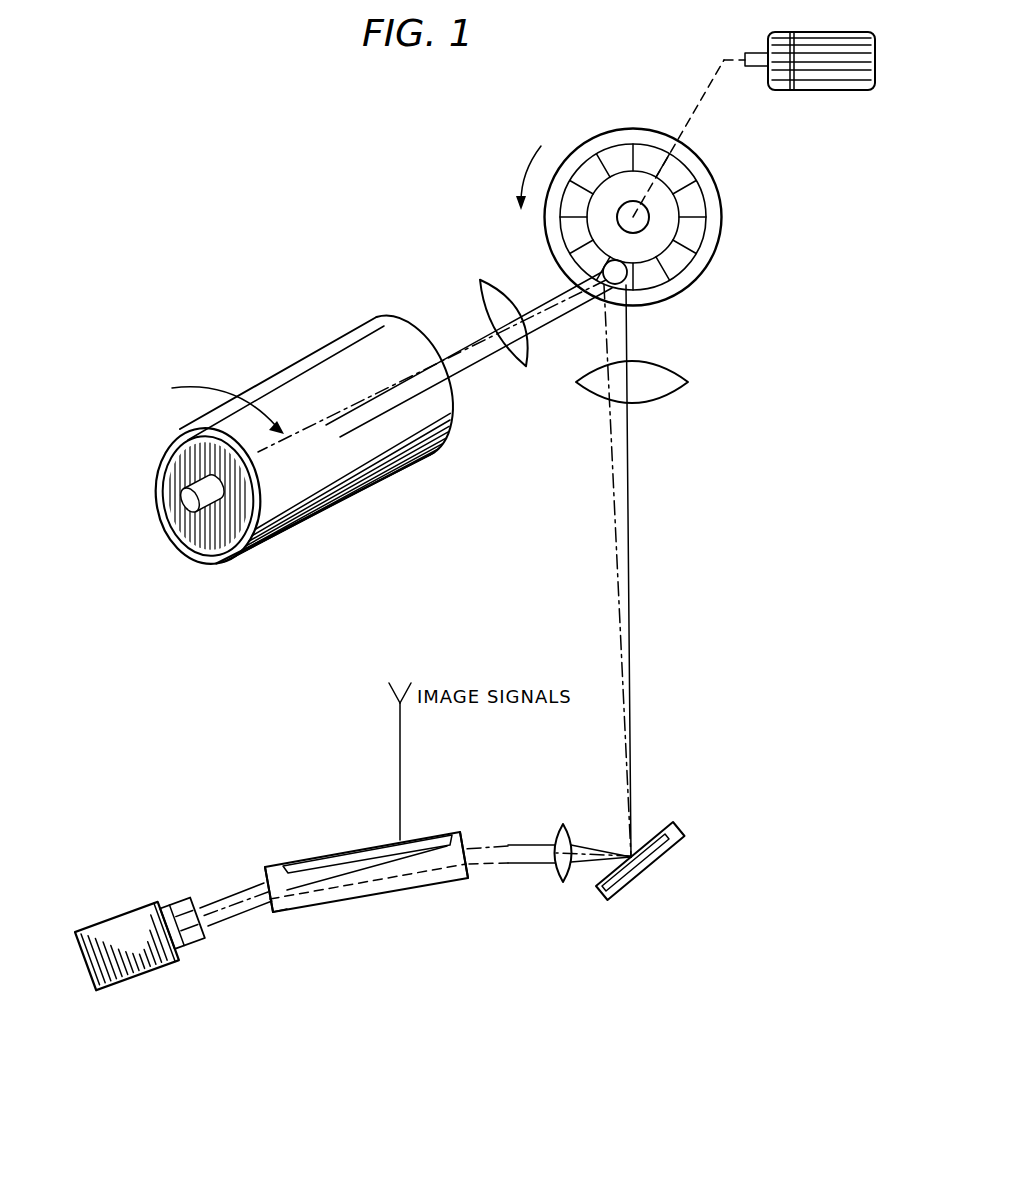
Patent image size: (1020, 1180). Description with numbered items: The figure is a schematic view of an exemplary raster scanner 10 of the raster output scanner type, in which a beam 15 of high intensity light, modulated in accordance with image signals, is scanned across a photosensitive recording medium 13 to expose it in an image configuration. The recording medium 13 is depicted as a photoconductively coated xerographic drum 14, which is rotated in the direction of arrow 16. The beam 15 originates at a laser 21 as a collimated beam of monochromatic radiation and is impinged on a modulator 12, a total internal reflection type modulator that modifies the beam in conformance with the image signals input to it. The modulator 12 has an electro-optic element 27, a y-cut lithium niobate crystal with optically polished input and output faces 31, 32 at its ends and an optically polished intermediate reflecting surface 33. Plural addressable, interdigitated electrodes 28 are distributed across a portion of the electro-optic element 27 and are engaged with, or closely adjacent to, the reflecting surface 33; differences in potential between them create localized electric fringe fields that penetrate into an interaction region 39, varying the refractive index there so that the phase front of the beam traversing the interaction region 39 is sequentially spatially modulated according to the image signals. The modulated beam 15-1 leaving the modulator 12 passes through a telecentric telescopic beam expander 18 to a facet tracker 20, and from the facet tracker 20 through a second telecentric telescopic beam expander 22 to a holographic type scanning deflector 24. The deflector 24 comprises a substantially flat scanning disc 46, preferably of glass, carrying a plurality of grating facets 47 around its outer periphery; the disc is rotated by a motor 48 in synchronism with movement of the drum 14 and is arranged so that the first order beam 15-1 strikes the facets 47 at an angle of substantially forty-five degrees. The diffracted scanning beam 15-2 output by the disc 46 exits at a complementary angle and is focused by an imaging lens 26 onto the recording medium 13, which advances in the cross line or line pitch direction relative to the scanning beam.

The raster scanner 10 is at (722, 293).
The modulator 12 is at (365, 798).
The recording medium 13 is at (293, 378).
The xerographic drum 14 is at (210, 548).
The beam 15 is at (215, 912).
The modulated beam 15-1 is at (612, 530).
The scanning beam 15-2 is at (544, 296).
The arrow 16 is at (215, 406).
The telecentric telescopic beam expander 18 is at (562, 884).
The facet tracker 20 is at (637, 900).
The laser 21 is at (115, 930).
The second telecentric telescopic beam expander 22 is at (676, 381).
The holographic scanning deflector 24 is at (729, 162).
The imaging lens 26 is at (486, 288).
The electro-optic element 27 is at (273, 914).
The addressable electrodes 28 is at (306, 861).
The input face 31 is at (270, 870).
The output face 32 is at (452, 834).
The reflecting surface 33 is at (422, 850).
The interaction region 39 is at (342, 887).
The scanning disc 46 is at (590, 138).
The facets 47 is at (697, 207).
The motor 48 is at (827, 90).